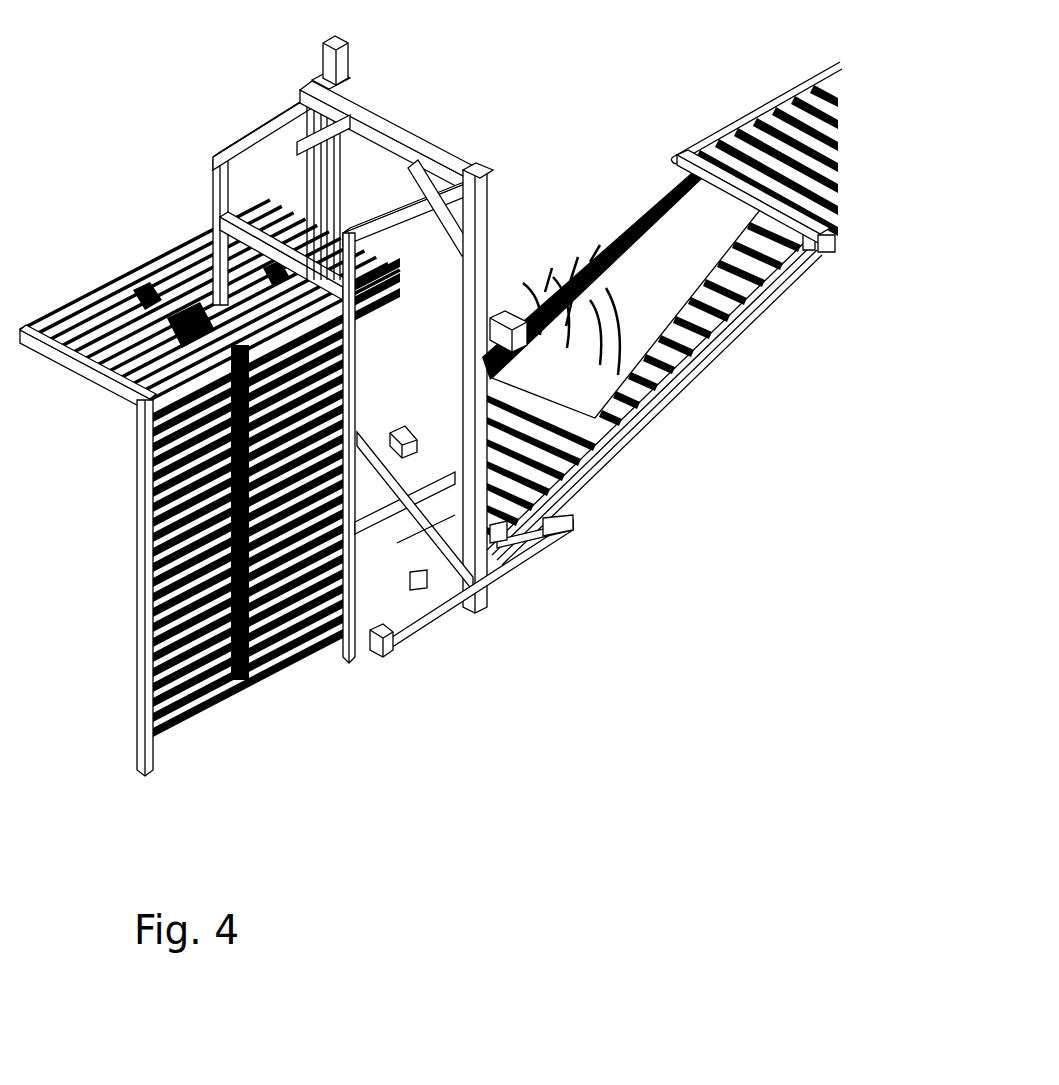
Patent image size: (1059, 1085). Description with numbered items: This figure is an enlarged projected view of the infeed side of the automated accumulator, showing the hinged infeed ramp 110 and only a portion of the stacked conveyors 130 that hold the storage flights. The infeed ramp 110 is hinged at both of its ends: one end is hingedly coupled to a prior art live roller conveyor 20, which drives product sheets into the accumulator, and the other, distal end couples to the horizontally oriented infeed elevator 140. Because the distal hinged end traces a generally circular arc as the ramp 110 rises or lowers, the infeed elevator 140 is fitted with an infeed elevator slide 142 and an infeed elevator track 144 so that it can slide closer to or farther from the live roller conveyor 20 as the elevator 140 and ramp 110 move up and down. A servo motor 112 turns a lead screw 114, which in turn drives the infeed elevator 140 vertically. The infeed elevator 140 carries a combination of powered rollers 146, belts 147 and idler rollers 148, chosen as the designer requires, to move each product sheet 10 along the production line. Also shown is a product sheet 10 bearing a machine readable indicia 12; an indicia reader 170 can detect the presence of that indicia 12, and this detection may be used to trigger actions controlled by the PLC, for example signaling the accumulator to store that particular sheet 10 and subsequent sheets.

The product sheet 10 is at (687, 236).
The machine readable indicia 12 is at (622, 310).
The live roller conveyor 20 is at (722, 112).
The hinged infeed ramp 110 is at (672, 440).
The servo motor 112 is at (347, 58).
The lead screw 114 is at (355, 135).
The stacked conveyors 130 is at (116, 264).
The infeed elevator 140 is at (395, 414).
The infeed elevator slide 142 is at (507, 543).
The infeed elevator track 144 is at (500, 545).
The powered rollers 146 is at (548, 523).
The belts 147 is at (373, 560).
The idler rollers 148 is at (397, 543).
The indicia reader 170 is at (503, 318).